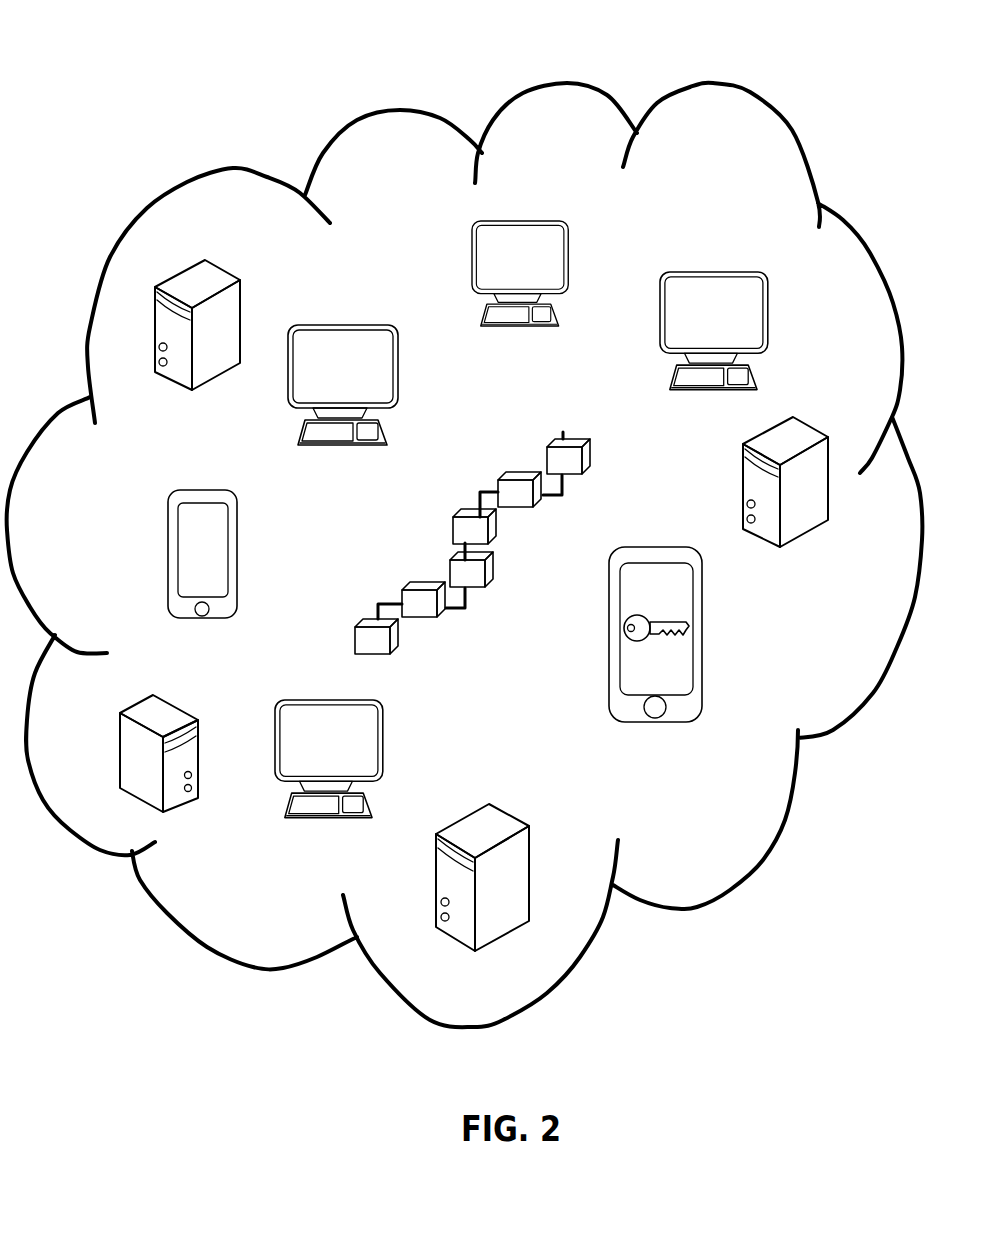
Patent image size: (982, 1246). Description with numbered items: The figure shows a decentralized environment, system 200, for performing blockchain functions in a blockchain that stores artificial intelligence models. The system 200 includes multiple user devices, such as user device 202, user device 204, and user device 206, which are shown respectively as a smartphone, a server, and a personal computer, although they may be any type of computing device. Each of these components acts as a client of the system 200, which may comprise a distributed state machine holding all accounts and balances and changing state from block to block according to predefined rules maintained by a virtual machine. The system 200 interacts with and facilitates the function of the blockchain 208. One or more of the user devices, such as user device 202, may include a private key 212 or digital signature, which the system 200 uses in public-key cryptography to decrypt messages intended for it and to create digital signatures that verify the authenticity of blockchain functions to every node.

The system 200 is at (492, 35).
The user device 202 is at (652, 739).
The user device 204 is at (775, 561).
The user device 206 is at (734, 259).
The blockchain 208 is at (440, 518).
The key 212 is at (597, 626).